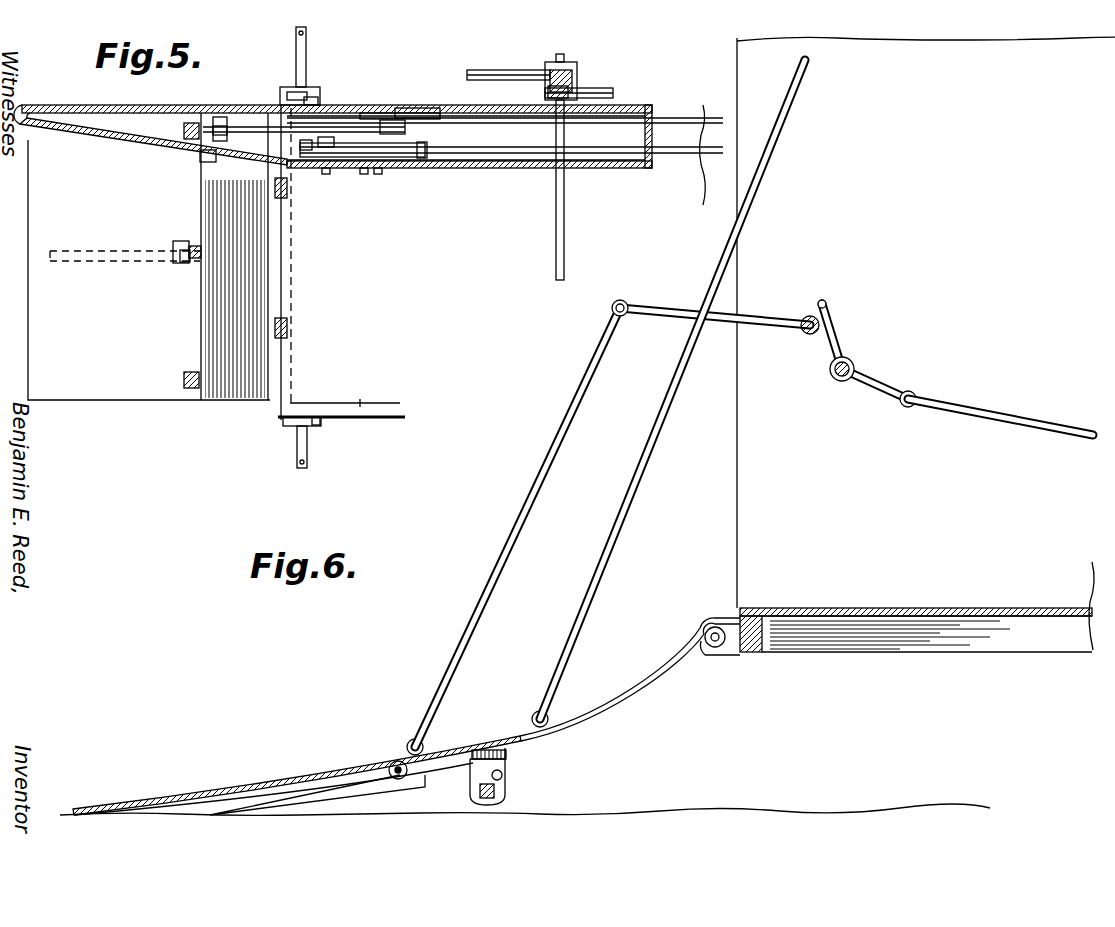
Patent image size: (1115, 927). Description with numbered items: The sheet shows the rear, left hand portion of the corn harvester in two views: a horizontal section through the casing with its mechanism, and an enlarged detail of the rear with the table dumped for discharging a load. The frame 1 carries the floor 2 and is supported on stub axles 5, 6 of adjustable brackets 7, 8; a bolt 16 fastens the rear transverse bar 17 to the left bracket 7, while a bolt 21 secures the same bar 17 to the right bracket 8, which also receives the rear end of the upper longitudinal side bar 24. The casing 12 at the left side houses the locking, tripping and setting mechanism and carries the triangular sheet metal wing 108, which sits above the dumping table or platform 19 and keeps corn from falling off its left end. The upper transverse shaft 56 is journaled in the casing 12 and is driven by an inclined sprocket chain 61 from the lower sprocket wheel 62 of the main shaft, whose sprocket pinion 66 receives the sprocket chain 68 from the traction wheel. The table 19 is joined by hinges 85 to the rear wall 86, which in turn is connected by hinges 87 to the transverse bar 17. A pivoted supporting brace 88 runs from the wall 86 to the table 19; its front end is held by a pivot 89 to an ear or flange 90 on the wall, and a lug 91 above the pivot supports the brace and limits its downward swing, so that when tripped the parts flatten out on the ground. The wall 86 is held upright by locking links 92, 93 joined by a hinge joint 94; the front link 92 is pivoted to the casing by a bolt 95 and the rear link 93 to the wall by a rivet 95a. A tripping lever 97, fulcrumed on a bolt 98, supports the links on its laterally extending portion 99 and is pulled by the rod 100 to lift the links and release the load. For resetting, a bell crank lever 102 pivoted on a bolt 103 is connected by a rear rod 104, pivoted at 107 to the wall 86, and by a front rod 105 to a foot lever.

In FIG. 6, the frame 1 is at (940, 654).
In FIG. 5, the floor 2 is at (341, 395).
In FIG. 6, the floor 2 is at (922, 608).
In FIG. 5, the stub axle 5 is at (308, 62).
In FIG. 5, the stub axle 6 is at (308, 456).
In FIG. 5, the adjustable bracket 7 is at (311, 88).
In FIG. 5, the adjustable bracket 8 is at (320, 424).
In FIG. 5, the casing 12 is at (642, 166).
In FIG. 6, the casing 12 is at (737, 506).
In FIG. 5, the bolt 16 is at (282, 90).
In FIG. 5, the rear transverse bar 17 is at (292, 296).
In FIG. 6, the rear transverse bar 17 is at (758, 652).
In FIG. 5, the dumping table or platform 19 is at (149, 256).
In FIG. 6, the dumping table or platform 19 is at (205, 792).
In FIG. 5, the bolt 21 is at (279, 420).
In FIG. 5, the upper longitudinal side bar 24 is at (345, 391).
In FIG. 5, the upper transverse shaft 56 is at (556, 214).
In FIG. 5, the inclined sprocket chain 61 is at (612, 92).
In FIG. 5, the lower sprocket wheel 62 is at (548, 90).
In FIG. 5, the sprocket pinion 66 is at (577, 70).
In FIG. 5, the sprocket chain 68 is at (500, 70).
In FIG. 5, the hinges 85 is at (184, 130).
In FIG. 6, the hinges 85 is at (397, 780).
In FIG. 5, the rear wall 86 is at (232, 324).
In FIG. 6, the rear wall 86 is at (612, 722).
In FIG. 5, the hinges 87 is at (275, 190).
In FIG. 6, the hinges 87 is at (715, 649).
In FIG. 5, the supporting brace 88 is at (112, 262).
In FIG. 6, the supporting brace 88 is at (310, 800).
In FIG. 5, the pivot 89 is at (172, 240).
In FIG. 6, the pivot 89 is at (508, 777).
In FIG. 5, the ear or flange 90 is at (173, 250).
In FIG. 6, the ear or flange 90 is at (505, 798).
In FIG. 5, the lug 91 is at (178, 264).
In FIG. 6, the lug 91 is at (480, 795).
In FIG. 5, the front locking link 92 is at (368, 172).
In FIG. 6, the front locking link 92 is at (662, 318).
In FIG. 5, the rear locking link 93 is at (300, 150).
In FIG. 6, the rear locking link 93 is at (568, 420).
In FIG. 5, the hinge joint 94 is at (395, 174).
In FIG. 6, the hinge joint 94 is at (622, 302).
In FIG. 5, the bolt 95 is at (329, 174).
In FIG. 6, the bolt 95 is at (805, 334).
In FIG. 5, the rivet 95a is at (205, 160).
In FIG. 6, the rivet 95a is at (414, 739).
In FIG. 6, the tripping lever 97 is at (896, 392).
In FIG. 5, the bolt 98 is at (306, 168).
In FIG. 6, the bolt 98 is at (852, 362).
In FIG. 5, the laterally extending portion 99 is at (338, 168).
In FIG. 6, the laterally extending portion 99 is at (828, 303).
In FIG. 5, the rod 100 is at (420, 160).
In FIG. 6, the rod 100 is at (1008, 427).
In FIG. 5, the bell crank lever 102 is at (406, 118).
In FIG. 5, the bolt 103 is at (377, 118).
In FIG. 5, the rear rod 104 is at (380, 108).
In FIG. 6, the rear rod 104 is at (642, 480).
In FIG. 5, the front rod 105 is at (466, 152).
In FIG. 5, the pivot 107 is at (222, 124).
In FIG. 6, the pivot 107 is at (538, 711).
In FIG. 5, the wing or extension 108 is at (93, 136).